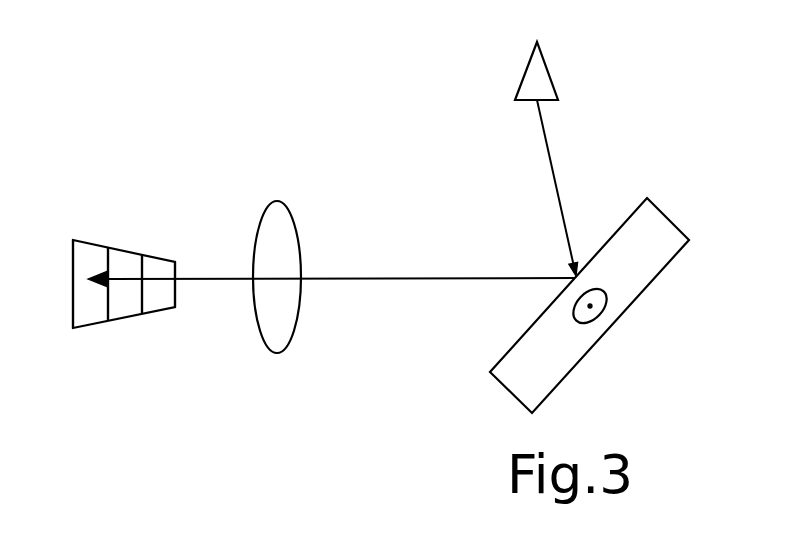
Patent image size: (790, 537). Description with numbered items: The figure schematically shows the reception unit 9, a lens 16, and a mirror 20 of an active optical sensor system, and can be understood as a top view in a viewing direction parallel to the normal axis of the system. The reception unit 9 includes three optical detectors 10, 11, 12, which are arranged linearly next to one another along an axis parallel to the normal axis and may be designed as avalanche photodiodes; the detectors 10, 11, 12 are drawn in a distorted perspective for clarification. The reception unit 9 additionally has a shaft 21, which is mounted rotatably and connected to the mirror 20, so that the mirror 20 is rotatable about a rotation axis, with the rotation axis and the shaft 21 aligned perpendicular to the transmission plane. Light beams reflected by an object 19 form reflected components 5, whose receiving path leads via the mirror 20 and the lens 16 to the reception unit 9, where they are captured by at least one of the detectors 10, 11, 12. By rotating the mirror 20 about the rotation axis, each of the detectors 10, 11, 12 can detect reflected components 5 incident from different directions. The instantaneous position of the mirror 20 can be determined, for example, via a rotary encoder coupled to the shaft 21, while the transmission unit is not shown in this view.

The reflected components 5 is at (543, 199).
The reception unit 9 is at (143, 238).
The optical detector 10 is at (93, 325).
The optical detector 11 is at (128, 315).
The optical detector 12 is at (168, 307).
The lens 16 is at (312, 228).
The object 19 is at (559, 62).
The mirror 20 is at (659, 293).
The shaft 21 is at (585, 340).